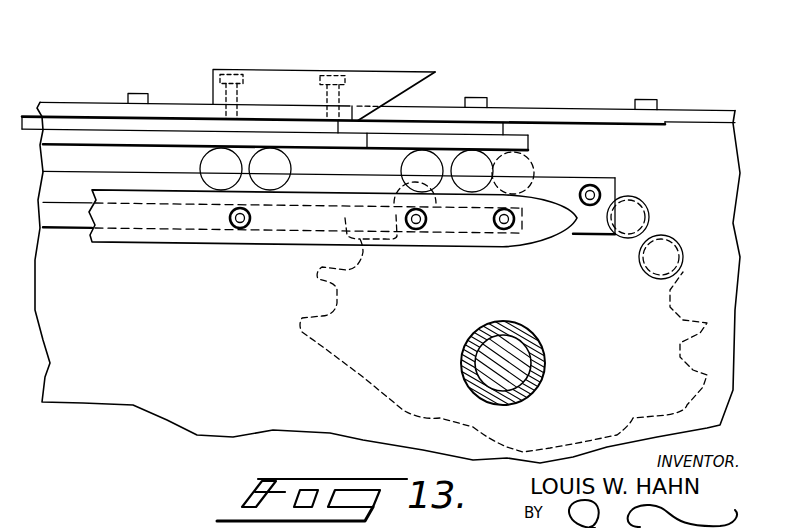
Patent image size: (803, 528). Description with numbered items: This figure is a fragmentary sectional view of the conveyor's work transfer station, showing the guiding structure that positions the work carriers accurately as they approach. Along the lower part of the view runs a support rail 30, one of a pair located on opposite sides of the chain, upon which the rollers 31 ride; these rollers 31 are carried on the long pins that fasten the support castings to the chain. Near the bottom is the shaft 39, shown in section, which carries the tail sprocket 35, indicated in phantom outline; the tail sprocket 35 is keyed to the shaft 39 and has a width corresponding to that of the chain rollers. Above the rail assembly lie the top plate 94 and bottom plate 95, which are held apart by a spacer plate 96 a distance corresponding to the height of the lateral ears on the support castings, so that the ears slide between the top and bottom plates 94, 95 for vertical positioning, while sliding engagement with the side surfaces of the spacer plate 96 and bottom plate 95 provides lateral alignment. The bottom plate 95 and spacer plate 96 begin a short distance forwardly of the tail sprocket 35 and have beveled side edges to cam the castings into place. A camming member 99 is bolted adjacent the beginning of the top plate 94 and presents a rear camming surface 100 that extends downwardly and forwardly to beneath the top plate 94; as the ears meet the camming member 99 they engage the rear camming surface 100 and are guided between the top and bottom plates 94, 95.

The support rail 30 is at (477, 247).
The roller 31 is at (198, 160).
The tail sprocket 35 is at (327, 288).
The shaft 39 is at (473, 362).
The top plate 94 is at (555, 108).
The bottom plate 95 is at (518, 151).
The spacer plate 96 is at (507, 125).
The camming member 99 is at (308, 70).
The rear camming surface 100 is at (440, 84).